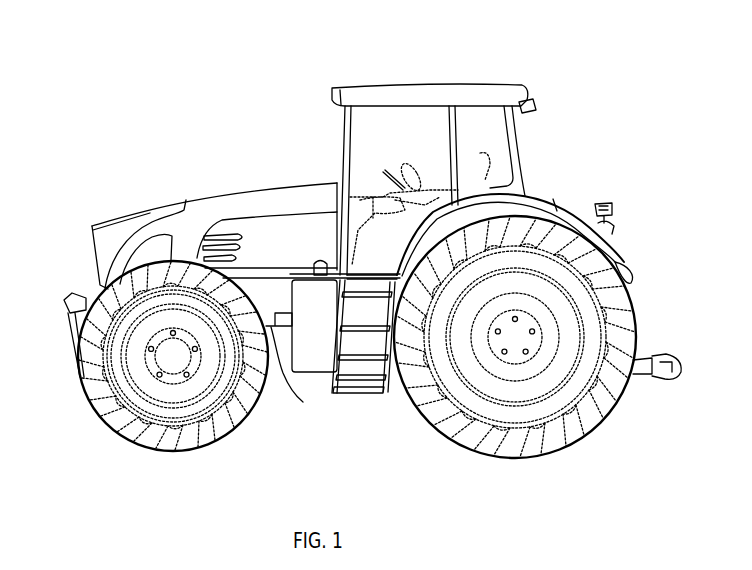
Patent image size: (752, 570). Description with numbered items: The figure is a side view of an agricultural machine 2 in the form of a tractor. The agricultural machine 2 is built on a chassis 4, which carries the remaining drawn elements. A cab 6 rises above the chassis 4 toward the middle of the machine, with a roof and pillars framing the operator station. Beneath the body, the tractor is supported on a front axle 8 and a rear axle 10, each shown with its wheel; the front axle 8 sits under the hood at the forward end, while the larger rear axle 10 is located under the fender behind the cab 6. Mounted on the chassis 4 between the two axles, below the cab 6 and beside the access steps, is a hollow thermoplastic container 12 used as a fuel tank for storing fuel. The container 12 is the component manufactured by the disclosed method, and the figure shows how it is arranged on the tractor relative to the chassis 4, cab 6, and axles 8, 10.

The agricultural machine 2 is at (176, 144).
The chassis 4 is at (303, 402).
The cab 6 is at (459, 76).
The front axle 8 is at (175, 356).
The rear axle 10 is at (515, 342).
The hollow thermoplastic container 12 is at (322, 347).